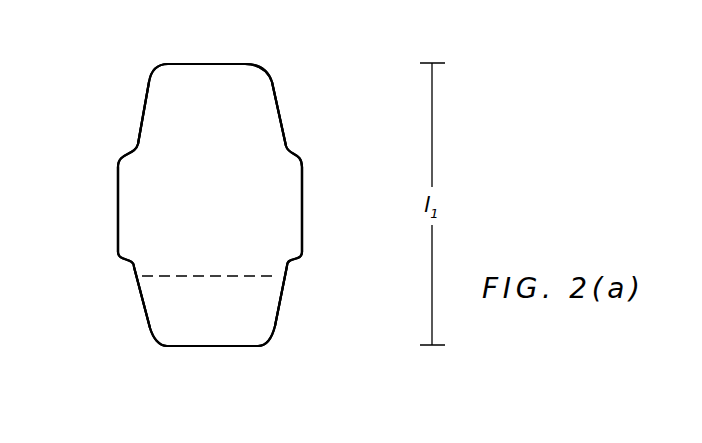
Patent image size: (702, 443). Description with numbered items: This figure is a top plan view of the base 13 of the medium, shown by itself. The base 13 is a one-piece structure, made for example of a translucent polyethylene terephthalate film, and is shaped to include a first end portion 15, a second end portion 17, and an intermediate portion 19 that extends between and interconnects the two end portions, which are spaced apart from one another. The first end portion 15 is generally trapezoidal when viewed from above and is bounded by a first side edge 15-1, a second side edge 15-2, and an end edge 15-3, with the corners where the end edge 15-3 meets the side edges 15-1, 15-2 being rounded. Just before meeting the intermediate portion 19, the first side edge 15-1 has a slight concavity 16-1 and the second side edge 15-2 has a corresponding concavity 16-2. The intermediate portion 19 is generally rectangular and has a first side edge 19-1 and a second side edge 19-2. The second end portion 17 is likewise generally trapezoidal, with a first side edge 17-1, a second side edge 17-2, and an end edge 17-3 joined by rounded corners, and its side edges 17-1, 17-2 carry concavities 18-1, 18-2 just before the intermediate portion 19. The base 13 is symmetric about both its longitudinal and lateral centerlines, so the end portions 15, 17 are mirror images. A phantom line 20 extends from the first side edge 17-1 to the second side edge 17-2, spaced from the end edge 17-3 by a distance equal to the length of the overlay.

The base 13 is at (124, 86).
The first end portion 15 is at (223, 113).
The first side edge 15-1 is at (143, 108).
The second side edge 15-2 is at (278, 103).
The end edge 15-3 is at (210, 65).
The concavity 16-1 is at (134, 149).
The concavity 16-2 is at (289, 147).
The intermediate portion 19 is at (223, 220).
The first side edge 19-1 is at (117, 200).
The second side edge 19-2 is at (303, 202).
The concavity 18-1 is at (131, 265).
The concavity 18-2 is at (288, 266).
The second end portion 17 is at (224, 320).
The first side edge 17-1 is at (139, 303).
The second side edge 17-2 is at (280, 308).
The end edge 17-3 is at (225, 346).
The phantom line 20 is at (177, 276).